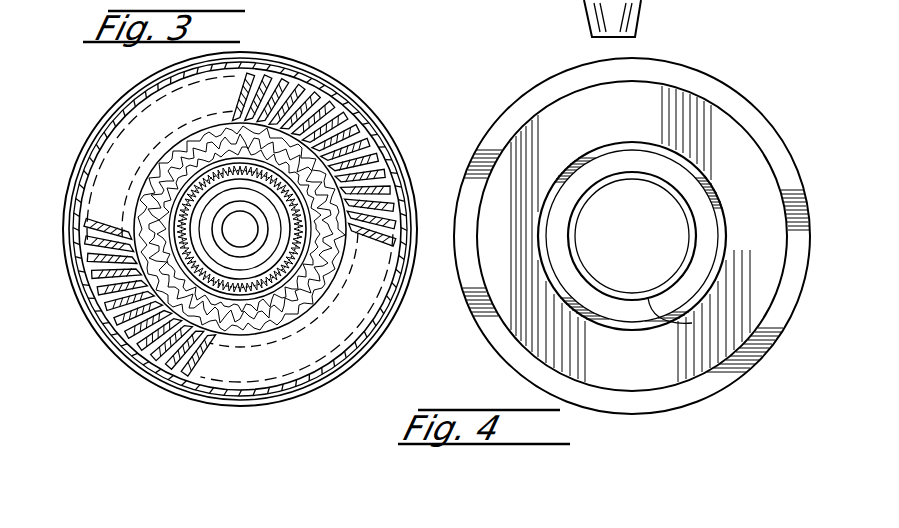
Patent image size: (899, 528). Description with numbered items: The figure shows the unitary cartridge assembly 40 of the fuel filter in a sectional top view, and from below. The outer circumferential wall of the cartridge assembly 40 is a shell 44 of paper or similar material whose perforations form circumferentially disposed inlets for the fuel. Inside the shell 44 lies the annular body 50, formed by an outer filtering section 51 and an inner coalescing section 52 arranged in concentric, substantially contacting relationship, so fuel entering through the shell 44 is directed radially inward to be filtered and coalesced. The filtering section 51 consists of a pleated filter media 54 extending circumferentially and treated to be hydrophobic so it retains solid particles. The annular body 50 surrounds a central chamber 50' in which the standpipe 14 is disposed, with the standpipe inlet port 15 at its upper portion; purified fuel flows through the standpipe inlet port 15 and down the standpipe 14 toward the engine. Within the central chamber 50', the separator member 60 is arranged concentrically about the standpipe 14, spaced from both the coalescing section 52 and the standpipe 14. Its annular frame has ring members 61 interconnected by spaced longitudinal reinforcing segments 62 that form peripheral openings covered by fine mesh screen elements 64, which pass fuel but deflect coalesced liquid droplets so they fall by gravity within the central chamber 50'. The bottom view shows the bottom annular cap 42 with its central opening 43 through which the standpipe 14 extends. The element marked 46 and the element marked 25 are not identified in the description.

In FIG. 3, the cartridge assembly 40 is at (344, 84).
In FIG. 4, the cartridge assembly 40 is at (758, 94).
In FIG. 3, the shell 44 is at (83, 152).
In FIG. 3, the filtering section 51 is at (364, 107).
In FIG. 3, the pleated filter media 54 is at (367, 138).
In FIG. 3, the annular body 50 is at (286, 229).
In FIG. 3, the central chamber 50' is at (248, 229).
In FIG. 3, the screen element 64 is at (193, 187).
In FIG. 3, the reinforcing segment 62 is at (240, 165).
In FIG. 3, the ring member 61 is at (259, 305).
In FIG. 3, the separator member 60 is at (285, 287).
In FIG. 4, the separator member 60 is at (664, 175).
In FIG. 3, the coalescing section 52 is at (300, 253).
In FIG. 3, the standpipe 14 is at (227, 257).
In FIG. 3, the standpipe inlet port 15 is at (232, 238).
In FIG. 4, the bottom annular cap 42 is at (777, 157).
In FIG. 4, the web 46 is at (580, 137).
In FIG. 4, the central opening 43 is at (672, 321).
In FIG. 4, the nozzle 25 is at (582, 5).